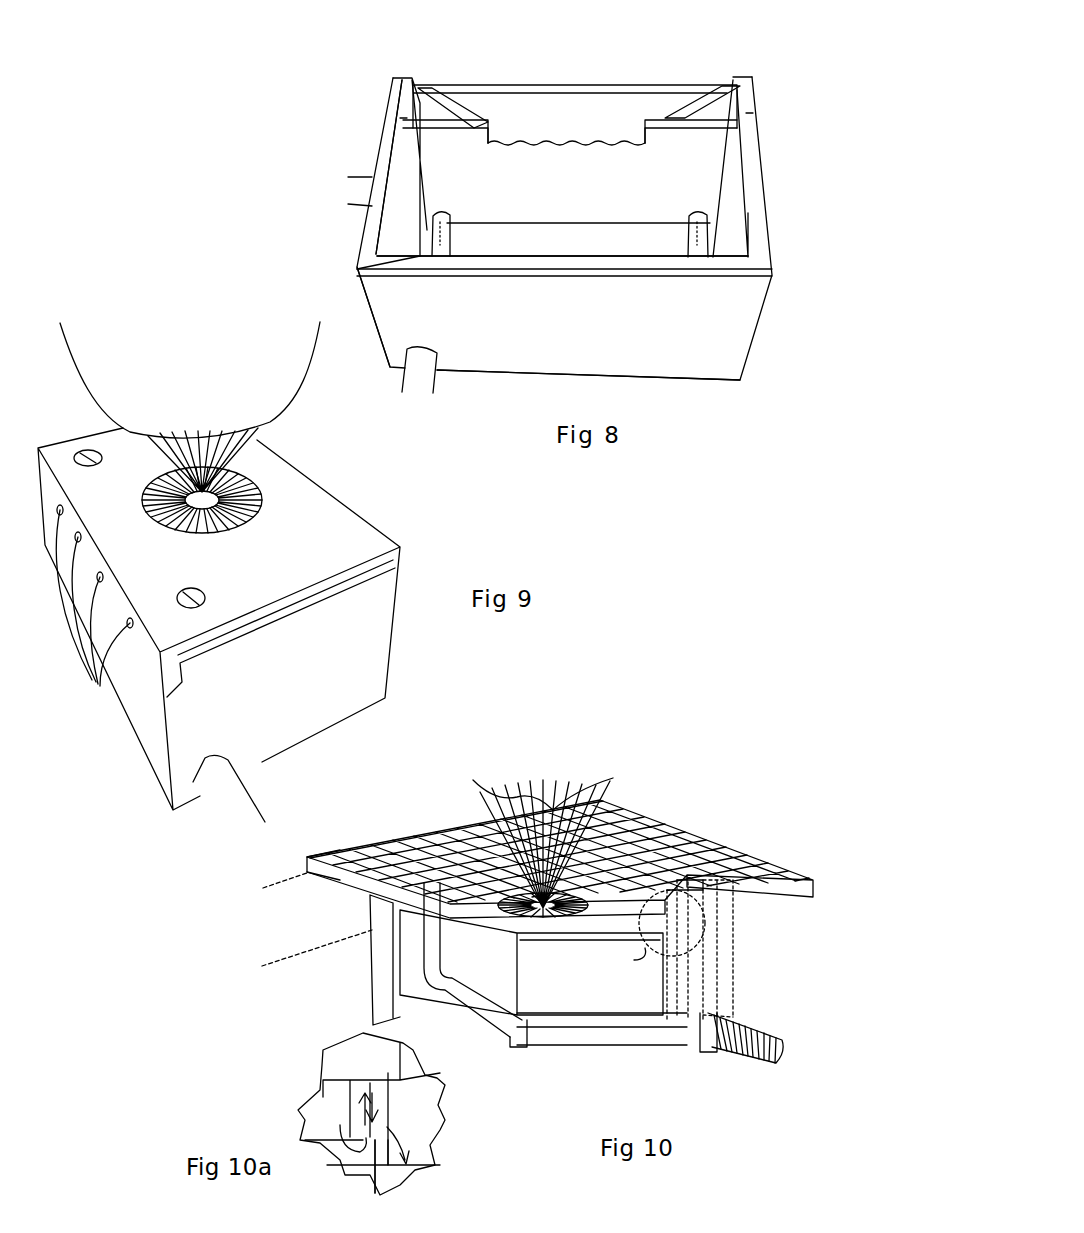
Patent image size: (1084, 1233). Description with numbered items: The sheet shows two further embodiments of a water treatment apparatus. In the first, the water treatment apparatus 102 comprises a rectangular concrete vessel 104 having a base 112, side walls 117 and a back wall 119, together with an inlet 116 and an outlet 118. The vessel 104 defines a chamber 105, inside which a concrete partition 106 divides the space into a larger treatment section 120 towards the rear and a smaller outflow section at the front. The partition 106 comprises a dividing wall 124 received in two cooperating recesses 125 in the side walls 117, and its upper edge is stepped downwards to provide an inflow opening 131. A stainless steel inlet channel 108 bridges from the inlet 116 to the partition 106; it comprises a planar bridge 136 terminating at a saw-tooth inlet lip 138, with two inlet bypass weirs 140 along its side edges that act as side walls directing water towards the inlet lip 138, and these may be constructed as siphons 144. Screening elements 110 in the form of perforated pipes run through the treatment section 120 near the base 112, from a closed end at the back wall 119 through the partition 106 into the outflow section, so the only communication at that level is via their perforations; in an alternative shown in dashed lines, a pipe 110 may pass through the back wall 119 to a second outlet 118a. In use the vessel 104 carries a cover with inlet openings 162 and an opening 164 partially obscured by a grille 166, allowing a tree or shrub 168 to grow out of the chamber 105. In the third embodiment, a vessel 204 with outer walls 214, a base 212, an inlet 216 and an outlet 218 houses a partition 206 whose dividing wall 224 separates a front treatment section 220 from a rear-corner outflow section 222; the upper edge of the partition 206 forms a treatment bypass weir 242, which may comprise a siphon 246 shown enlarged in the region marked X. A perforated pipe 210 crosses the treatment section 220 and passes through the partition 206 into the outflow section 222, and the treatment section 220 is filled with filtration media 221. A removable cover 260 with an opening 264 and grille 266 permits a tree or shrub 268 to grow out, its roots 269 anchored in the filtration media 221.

In FIG. 9, the water treatment apparatus 102 is at (420, 597).
In FIG. 8, the vessel 104 is at (750, 350).
In FIG. 9, the vessel 104 is at (143, 703).
In FIG. 8, the chamber 105 is at (594, 236).
In FIG. 8, the partition 106 is at (697, 157).
In FIG. 8, the inlet channel 108 is at (602, 107).
In FIG. 8, the screening elements 110 is at (688, 240).
In FIG. 8, the base 112 is at (543, 233).
In FIG. 8, the inlet 116 is at (575, 83).
In FIG. 8, the side walls 117 is at (385, 158).
In FIG. 8, the outlet 118 is at (365, 200).
In FIG. 9, the outlet 118 is at (220, 798).
In FIG. 8, the second outlet 118a is at (430, 382).
In FIG. 8, the back wall 119 is at (635, 347).
In FIG. 8, the treatment section 120 is at (417, 217).
In FIG. 8, the dividing wall 124 is at (433, 190).
In FIG. 8, the recesses 125 is at (400, 118).
In FIG. 8, the inflow opening 131 is at (560, 132).
In FIG. 8, the planar bridge 136 is at (512, 110).
In FIG. 8, the inlet lip 138 is at (603, 143).
In FIG. 8, the inlet bypass weirs 140 is at (433, 100).
In FIG. 8, the siphons 144 is at (697, 100).
In FIG. 9, the inlet openings 162 is at (130, 630).
In FIG. 9, the opening 164 is at (263, 493).
In FIG. 9, the grille 166 is at (247, 520).
In FIG. 9, the tree or shrub 168 is at (190, 380).
In FIG. 10, the vessel 204 is at (720, 985).
In FIG. 10, the partition 206 is at (653, 990).
In FIG. 10, the screening element 210 is at (515, 1043).
In FIG. 10, the base 212 is at (500, 1030).
In FIG. 10, the outer walls 214 is at (382, 957).
In FIG. 10, the inlet 216 is at (375, 895).
In FIG. 10, the outlet 218 is at (770, 1047).
In FIG. 10, the treatment section 220 is at (531, 962).
In FIG. 10, the filtration media 221 is at (578, 1000).
In FIG. 10, the outflow section 222 is at (692, 990).
In FIG. 10, the dividing wall 224 is at (672, 962).
In FIG. 10A, the dividing wall 224 is at (383, 1172).
In FIG. 10A, the treatment bypass weir 242 is at (373, 1115).
In FIG. 10A, the siphon 246 is at (347, 1105).
In FIG. 10, the cover 260 is at (717, 893).
In FIG. 10, the opening 264 is at (478, 870).
In FIG. 10, the grille 266 is at (470, 870).
In FIG. 10, the tree or shrub 268 is at (598, 785).
In FIG. 10, the roots 269 is at (570, 900).